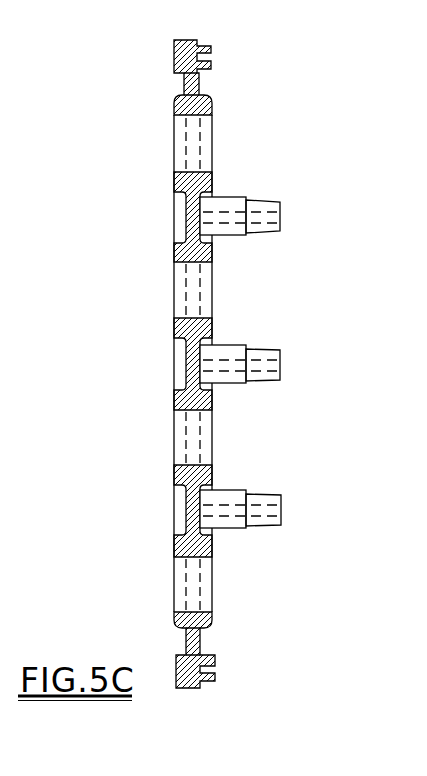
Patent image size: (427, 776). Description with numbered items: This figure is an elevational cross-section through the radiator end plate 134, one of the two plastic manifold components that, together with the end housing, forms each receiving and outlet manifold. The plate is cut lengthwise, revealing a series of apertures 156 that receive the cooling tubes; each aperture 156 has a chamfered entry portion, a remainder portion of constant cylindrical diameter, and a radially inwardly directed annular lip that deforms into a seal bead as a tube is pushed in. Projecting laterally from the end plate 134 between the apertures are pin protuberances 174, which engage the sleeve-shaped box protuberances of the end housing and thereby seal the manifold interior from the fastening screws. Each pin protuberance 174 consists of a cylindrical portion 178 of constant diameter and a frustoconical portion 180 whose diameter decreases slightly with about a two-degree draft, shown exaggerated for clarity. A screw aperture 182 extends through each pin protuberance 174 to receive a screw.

The radiator end plate 134 is at (131, 167).
The aperture 156 is at (173, 435).
The pin protuberance 174 is at (233, 345).
The cylindrical portion 178 is at (236, 500).
The frustoconical portion 180 is at (256, 236).
The screw aperture 182 is at (253, 210).